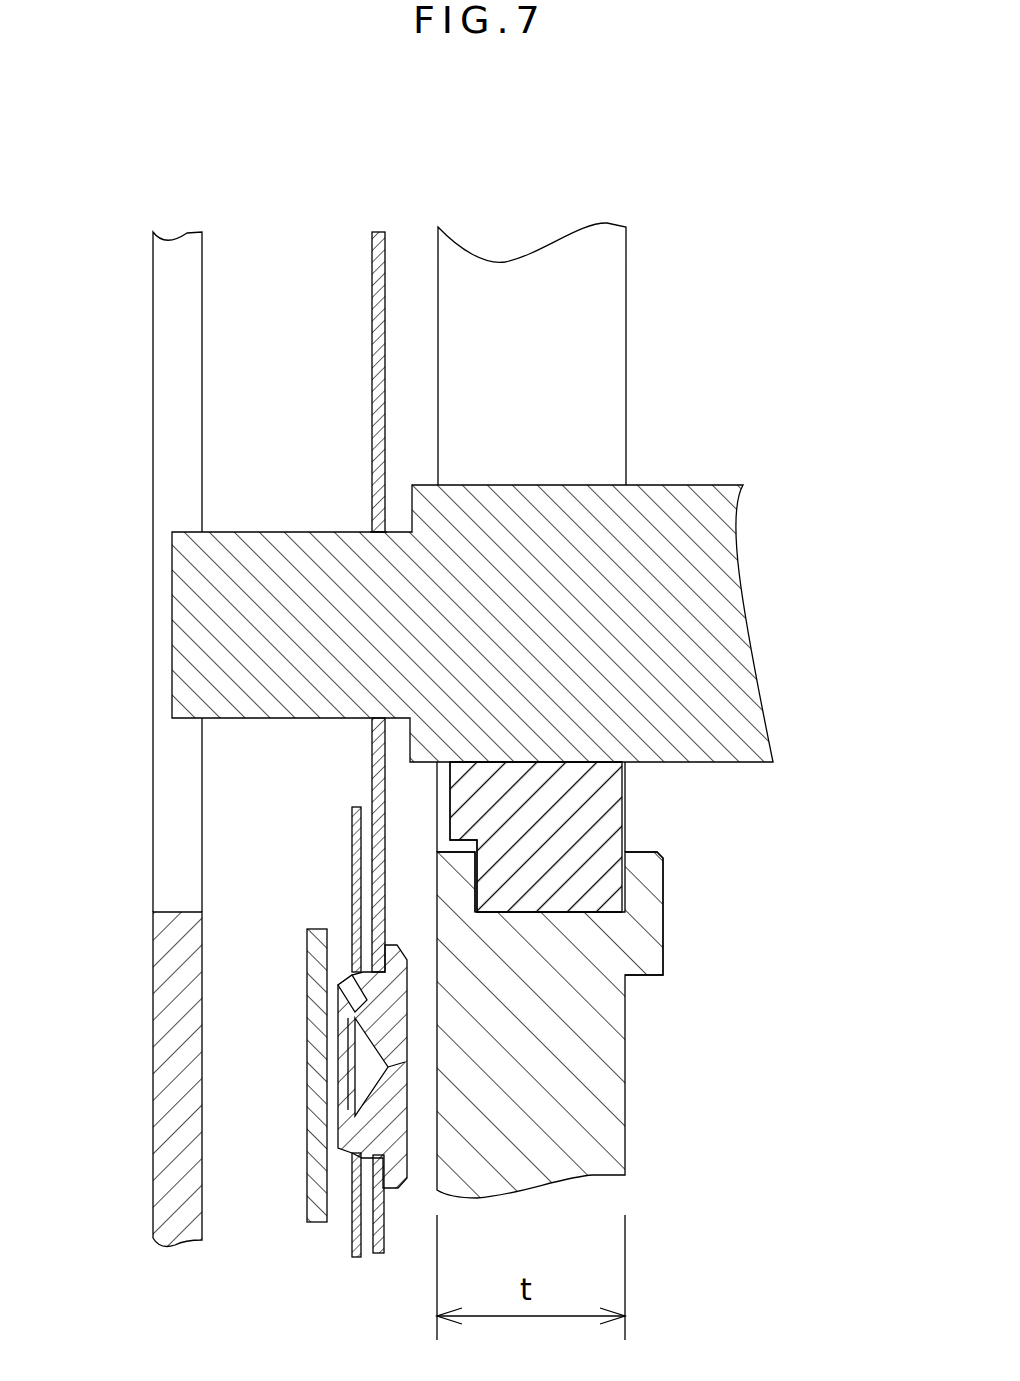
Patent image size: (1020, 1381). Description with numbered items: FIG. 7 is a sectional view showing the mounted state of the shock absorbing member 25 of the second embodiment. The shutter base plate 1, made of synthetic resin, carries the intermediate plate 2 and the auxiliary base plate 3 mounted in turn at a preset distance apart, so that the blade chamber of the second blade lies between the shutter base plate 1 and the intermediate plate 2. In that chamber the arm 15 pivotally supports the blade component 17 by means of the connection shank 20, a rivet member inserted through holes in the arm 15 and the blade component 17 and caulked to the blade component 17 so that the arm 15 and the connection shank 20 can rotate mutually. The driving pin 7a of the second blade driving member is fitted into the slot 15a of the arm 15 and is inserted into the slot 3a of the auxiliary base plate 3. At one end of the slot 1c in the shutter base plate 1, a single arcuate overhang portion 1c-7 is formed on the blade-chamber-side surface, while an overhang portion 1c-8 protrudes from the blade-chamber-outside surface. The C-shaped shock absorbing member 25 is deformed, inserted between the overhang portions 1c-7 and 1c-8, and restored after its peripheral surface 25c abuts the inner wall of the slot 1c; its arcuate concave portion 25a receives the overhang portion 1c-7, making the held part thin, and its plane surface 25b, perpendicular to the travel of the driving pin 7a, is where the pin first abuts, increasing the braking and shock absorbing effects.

The shutter base plate 1 is at (592, 1142).
The slot 1c is at (607, 313).
The overhang portion 1c-7 is at (443, 877).
The overhang portion 1c-8 is at (645, 877).
The intermediate plate 2 is at (320, 1160).
The auxiliary base plate 3 is at (168, 1180).
The slot 3a is at (172, 428).
The driving pin 7a is at (659, 518).
The arm 15 is at (373, 355).
The slot 15a is at (371, 530).
The blade component 17 is at (353, 928).
The connection shank 20 is at (377, 1025).
The shock absorbing member 25 is at (582, 803).
The arcuate concave portion 25a is at (458, 845).
The plane surface 25b is at (558, 762).
The peripheral surface 25c is at (567, 913).